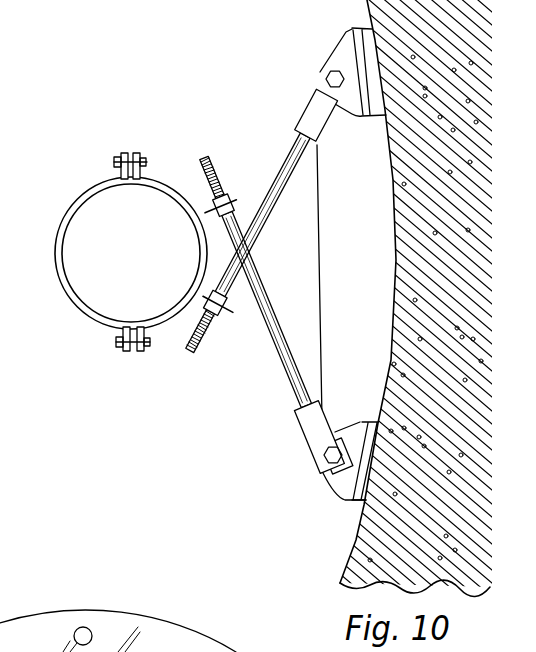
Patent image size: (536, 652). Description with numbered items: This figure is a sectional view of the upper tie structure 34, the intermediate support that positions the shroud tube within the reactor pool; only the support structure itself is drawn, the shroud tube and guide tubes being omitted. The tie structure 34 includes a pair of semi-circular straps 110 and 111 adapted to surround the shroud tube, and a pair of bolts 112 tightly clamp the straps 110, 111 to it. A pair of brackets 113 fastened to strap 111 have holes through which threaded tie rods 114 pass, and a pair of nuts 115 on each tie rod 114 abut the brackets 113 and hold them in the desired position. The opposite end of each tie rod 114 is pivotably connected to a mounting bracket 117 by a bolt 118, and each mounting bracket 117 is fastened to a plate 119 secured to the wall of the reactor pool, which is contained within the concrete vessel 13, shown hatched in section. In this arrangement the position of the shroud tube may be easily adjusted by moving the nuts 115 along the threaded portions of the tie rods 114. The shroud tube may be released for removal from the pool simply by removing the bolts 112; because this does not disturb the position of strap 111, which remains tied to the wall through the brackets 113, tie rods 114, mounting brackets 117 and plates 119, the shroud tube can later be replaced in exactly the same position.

The upper tie structure 34 is at (189, 66).
The concrete vessel 13 is at (395, 257).
The semi-circular strap 110 is at (54, 249).
The semi-circular strap 111 is at (160, 330).
The bolts 112 is at (143, 161).
The brackets 113 is at (199, 196).
The threaded tie rods 114 is at (307, 157).
The nuts 115 is at (222, 203).
The mounting bracket 117 is at (337, 43).
The bolt 118 is at (326, 79).
The plate 119 is at (358, 506).